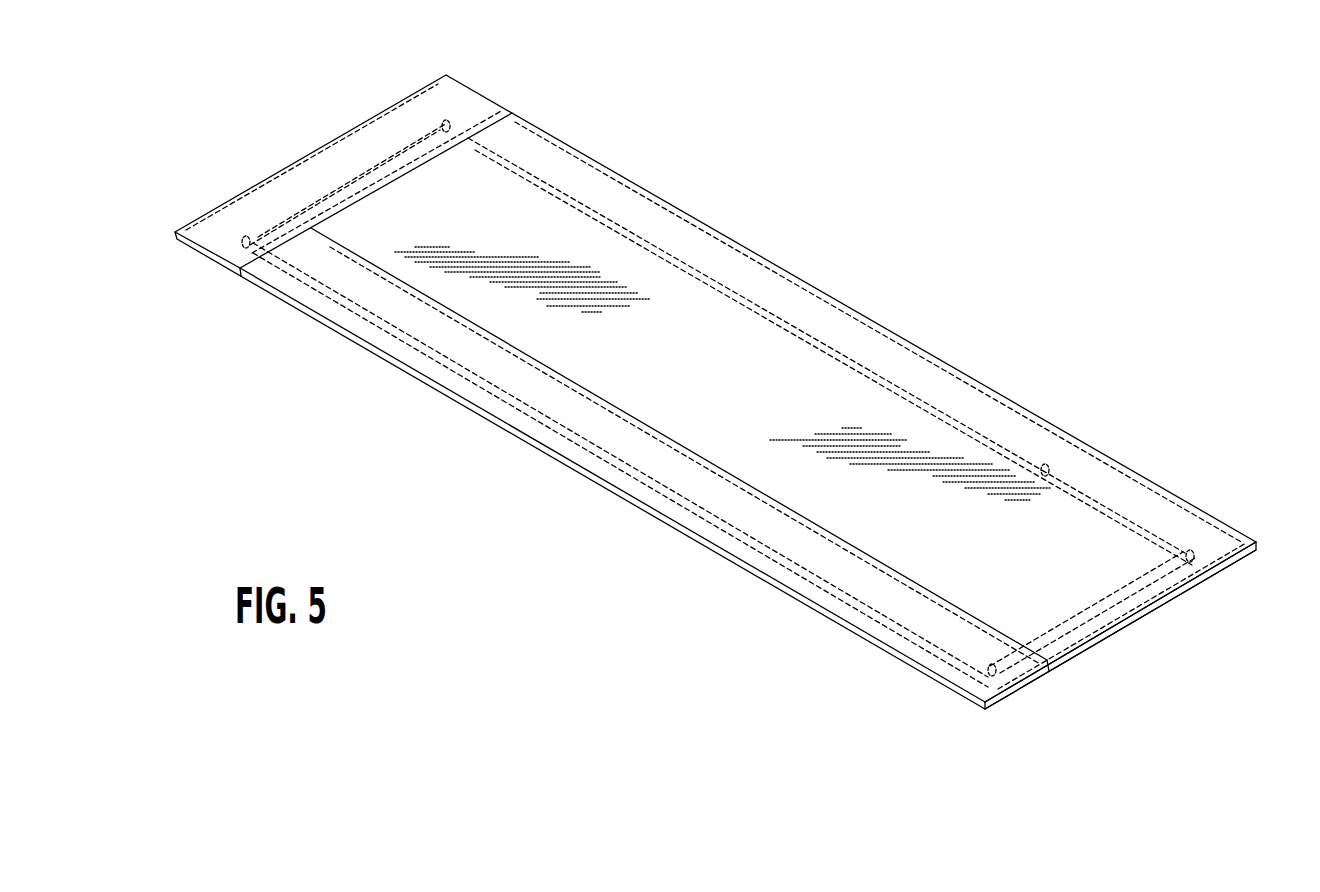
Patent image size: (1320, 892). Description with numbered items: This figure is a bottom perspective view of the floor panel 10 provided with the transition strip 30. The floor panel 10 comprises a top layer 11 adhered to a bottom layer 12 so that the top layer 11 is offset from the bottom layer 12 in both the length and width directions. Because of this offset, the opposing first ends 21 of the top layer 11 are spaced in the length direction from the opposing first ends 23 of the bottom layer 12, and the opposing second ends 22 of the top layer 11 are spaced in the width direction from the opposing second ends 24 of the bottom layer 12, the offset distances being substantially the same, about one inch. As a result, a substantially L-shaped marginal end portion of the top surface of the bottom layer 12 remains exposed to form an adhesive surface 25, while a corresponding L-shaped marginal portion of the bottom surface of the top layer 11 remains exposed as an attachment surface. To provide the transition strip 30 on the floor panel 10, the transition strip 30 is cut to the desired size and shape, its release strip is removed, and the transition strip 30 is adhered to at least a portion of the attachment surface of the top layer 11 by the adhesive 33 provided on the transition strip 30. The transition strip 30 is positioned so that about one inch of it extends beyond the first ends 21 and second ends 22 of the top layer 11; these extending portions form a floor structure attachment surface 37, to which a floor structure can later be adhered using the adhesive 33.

The floor panel 10 is at (688, 135).
The top layer 11 is at (750, 520).
The bottom layer 12 is at (1113, 625).
The first ends of the top layer 21 is at (410, 140).
The second ends of the top layer 22 is at (250, 250).
The first ends of the bottom layer 23 is at (450, 143).
The second ends of the bottom layer 24 is at (778, 265).
The adhesive surface 25 is at (945, 380).
The transition strip 30 is at (341, 124).
The adhesive 33 is at (297, 205).
The floor structure attachment surface 37 is at (228, 204).